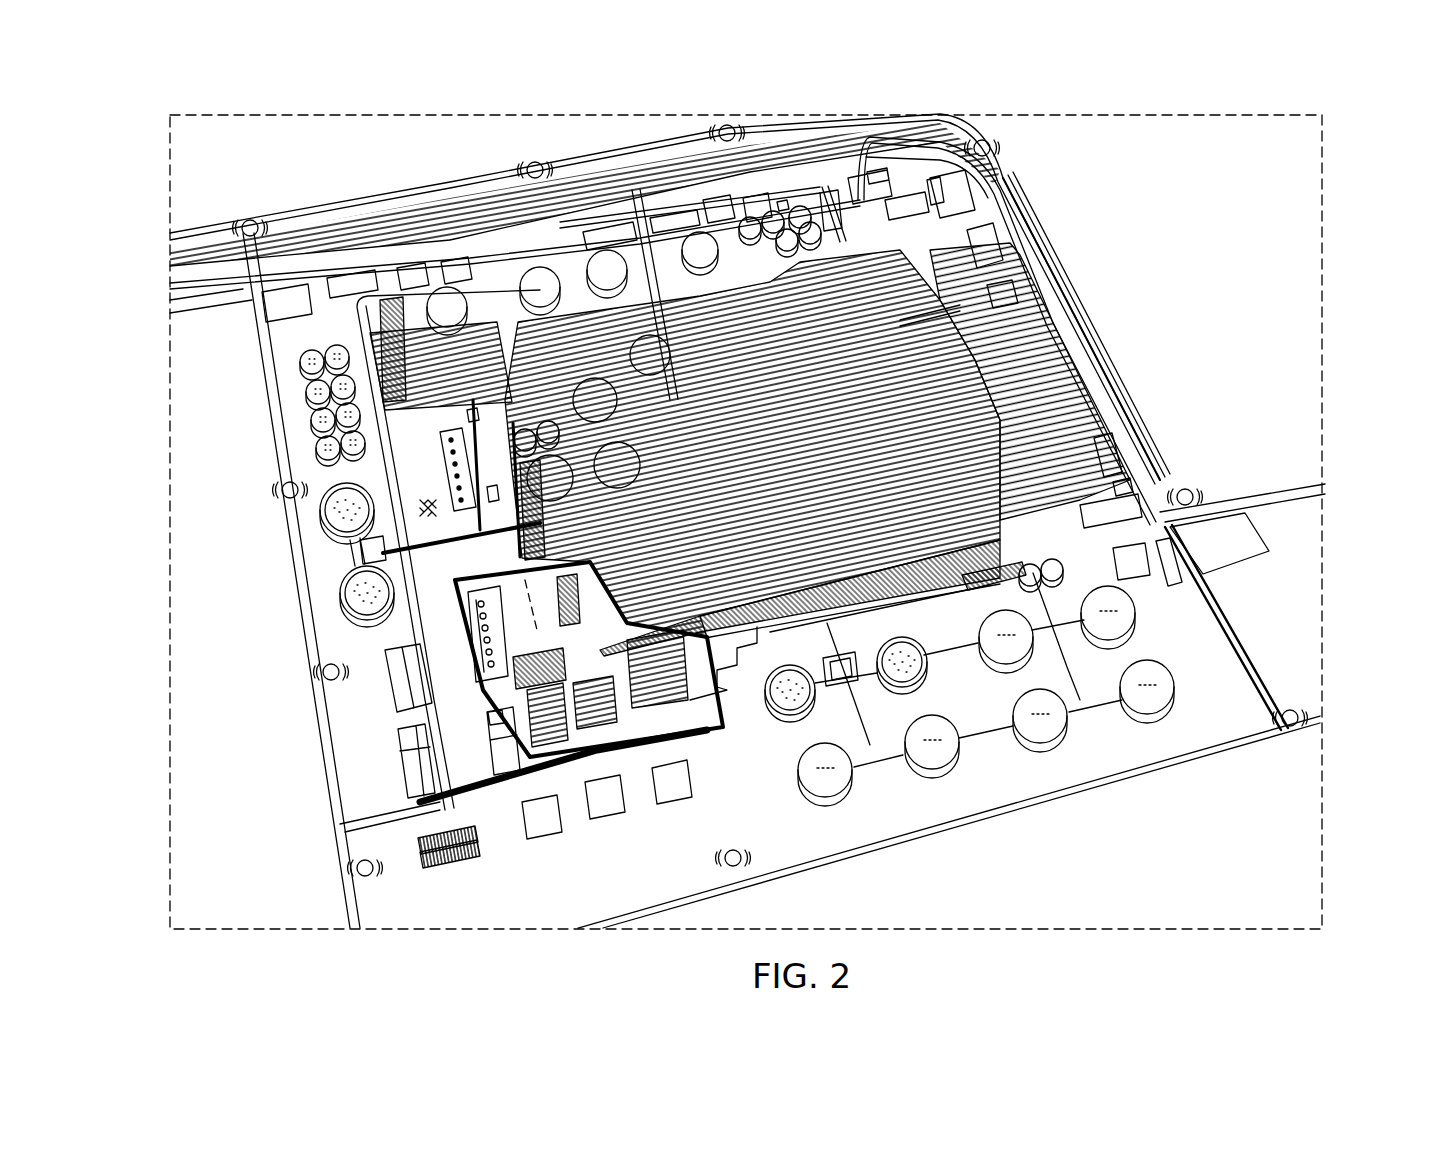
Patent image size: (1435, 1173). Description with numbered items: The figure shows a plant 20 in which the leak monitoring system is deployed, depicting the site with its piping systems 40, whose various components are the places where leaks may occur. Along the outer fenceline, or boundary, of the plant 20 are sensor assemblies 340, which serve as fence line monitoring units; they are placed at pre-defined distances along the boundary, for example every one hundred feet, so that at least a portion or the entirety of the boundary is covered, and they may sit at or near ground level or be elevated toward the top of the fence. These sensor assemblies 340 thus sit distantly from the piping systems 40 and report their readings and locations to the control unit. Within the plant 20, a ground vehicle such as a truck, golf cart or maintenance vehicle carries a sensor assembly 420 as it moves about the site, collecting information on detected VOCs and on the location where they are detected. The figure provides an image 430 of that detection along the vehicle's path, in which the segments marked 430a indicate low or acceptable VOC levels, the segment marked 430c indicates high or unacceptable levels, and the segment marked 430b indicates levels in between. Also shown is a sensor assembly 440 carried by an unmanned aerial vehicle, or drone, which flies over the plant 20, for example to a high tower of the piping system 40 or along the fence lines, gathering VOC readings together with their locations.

The plant 20 is at (1352, 103).
The piping system 40 is at (470, 674).
The sensor assembly 340 is at (283, 490).
The sensor assembly 420 is at (1015, 380).
The image 430 is at (860, 622).
The low/acceptable VOC level indication 430a is at (686, 395).
The intermediate VOC level indication 430b is at (900, 600).
The high/unacceptable VOC level indication 430c is at (1017, 550).
The sensor assembly 440 is at (420, 510).